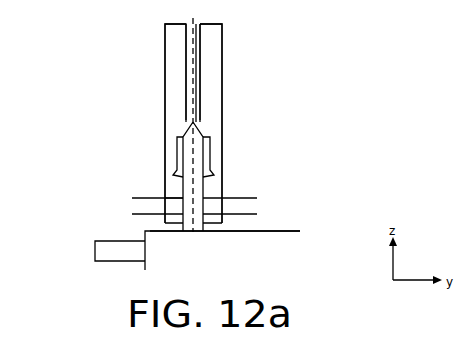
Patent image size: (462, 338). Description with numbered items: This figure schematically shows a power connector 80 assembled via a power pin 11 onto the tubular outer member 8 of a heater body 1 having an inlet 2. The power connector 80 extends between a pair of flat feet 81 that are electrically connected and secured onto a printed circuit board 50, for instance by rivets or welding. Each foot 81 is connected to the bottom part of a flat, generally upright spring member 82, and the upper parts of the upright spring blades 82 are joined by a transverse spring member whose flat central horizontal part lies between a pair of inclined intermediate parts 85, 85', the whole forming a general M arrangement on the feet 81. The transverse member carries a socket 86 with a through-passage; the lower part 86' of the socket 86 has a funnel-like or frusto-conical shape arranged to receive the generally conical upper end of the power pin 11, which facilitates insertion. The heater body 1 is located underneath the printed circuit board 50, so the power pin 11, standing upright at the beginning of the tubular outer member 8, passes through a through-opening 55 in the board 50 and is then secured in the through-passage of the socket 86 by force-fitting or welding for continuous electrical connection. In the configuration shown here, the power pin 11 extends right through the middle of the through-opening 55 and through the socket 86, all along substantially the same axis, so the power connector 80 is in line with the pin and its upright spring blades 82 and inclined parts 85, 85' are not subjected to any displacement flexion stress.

The heater body 1 is at (283, 216).
The inlet 2 is at (100, 250).
The tubular outer member 8 is at (281, 259).
The power pin 11 is at (198, 185).
The printed circuit board 50 is at (136, 205).
The through-opening 55 is at (213, 206).
The power connector 80 is at (253, 36).
The flat feet 81 is at (178, 197).
The upright spring member 82 is at (175, 70).
The inclined intermediate part 85 is at (230, 73).
The inclined intermediate part 85' is at (150, 72).
The socket 86 is at (149, 155).
The lower part of socket 86' is at (227, 156).